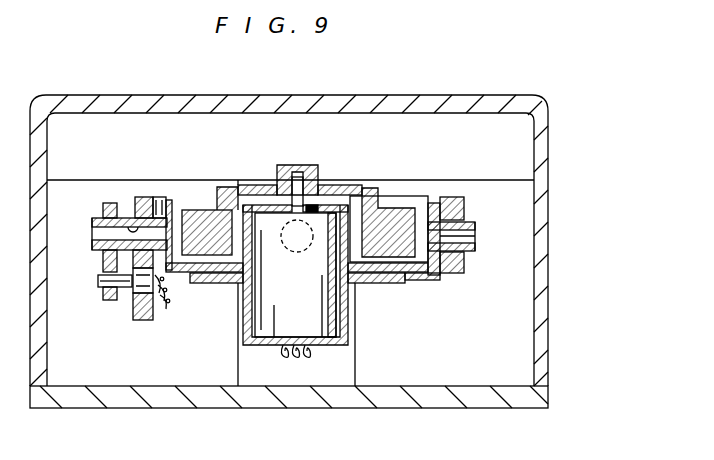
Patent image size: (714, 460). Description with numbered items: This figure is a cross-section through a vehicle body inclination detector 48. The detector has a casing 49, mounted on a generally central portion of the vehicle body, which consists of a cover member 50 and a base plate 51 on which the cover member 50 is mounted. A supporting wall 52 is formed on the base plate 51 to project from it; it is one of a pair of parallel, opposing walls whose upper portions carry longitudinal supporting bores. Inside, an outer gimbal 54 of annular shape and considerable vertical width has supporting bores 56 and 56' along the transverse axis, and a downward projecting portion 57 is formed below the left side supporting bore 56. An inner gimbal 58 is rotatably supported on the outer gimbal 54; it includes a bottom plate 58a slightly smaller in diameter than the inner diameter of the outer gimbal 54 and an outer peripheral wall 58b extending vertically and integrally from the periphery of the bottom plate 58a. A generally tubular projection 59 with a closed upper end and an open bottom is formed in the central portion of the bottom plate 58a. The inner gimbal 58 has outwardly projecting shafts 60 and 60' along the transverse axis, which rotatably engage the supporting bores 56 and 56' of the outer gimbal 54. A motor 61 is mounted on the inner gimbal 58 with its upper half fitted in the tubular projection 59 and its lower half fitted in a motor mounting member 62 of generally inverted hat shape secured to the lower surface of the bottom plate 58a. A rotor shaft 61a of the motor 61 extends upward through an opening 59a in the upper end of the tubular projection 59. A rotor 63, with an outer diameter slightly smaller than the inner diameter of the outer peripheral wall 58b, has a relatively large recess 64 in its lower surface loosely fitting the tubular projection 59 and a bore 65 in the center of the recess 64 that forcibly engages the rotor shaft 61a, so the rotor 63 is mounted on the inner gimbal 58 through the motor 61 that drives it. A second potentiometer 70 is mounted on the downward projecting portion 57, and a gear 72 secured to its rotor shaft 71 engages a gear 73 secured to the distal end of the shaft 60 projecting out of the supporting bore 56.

The vehicle body inclination detector 48 is at (572, 76).
The casing 49 is at (551, 137).
The cover member 50 is at (497, 97).
The base plate 51 is at (102, 408).
The supporting wall 52 is at (350, 378).
The outer gimbal 54 is at (144, 200).
The supporting bore 56 is at (129, 198).
The supporting bore 56' is at (475, 223).
The downward projecting portion 57 is at (144, 322).
The inner gimbal 58 is at (433, 276).
The bottom plate 58a is at (420, 278).
The outer peripheral wall 58b is at (433, 202).
The tubular projection 59 is at (340, 185).
The opening 59a is at (318, 206).
The shaft 60 is at (83, 263).
The shaft 60' is at (481, 262).
The motor 61 is at (263, 310).
The rotor shaft 61a is at (297, 176).
The motor mounting member 62 is at (346, 326).
The rotor 63 is at (197, 213).
The recess 64 is at (227, 198).
The bore 65 is at (283, 180).
The second potentiometer 70 is at (130, 300).
The rotor shaft 71 is at (118, 301).
The gear 72 is at (104, 290).
The gear 73 is at (104, 206).